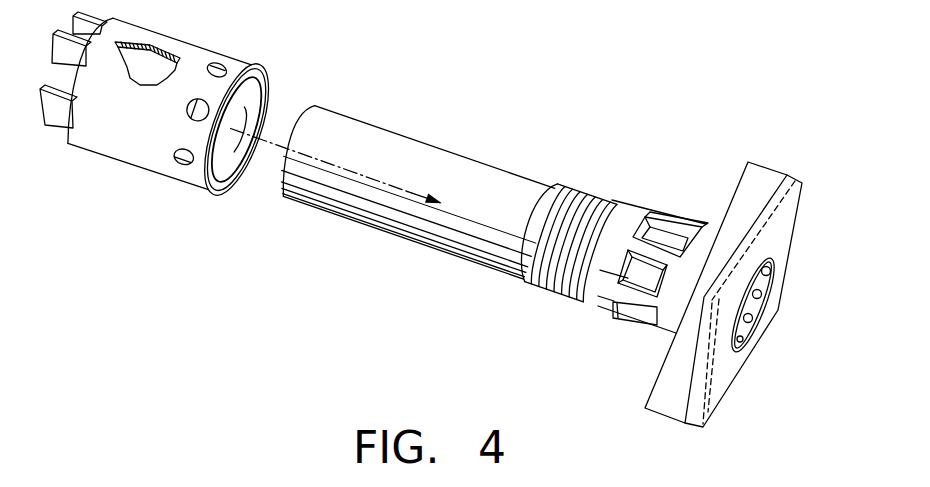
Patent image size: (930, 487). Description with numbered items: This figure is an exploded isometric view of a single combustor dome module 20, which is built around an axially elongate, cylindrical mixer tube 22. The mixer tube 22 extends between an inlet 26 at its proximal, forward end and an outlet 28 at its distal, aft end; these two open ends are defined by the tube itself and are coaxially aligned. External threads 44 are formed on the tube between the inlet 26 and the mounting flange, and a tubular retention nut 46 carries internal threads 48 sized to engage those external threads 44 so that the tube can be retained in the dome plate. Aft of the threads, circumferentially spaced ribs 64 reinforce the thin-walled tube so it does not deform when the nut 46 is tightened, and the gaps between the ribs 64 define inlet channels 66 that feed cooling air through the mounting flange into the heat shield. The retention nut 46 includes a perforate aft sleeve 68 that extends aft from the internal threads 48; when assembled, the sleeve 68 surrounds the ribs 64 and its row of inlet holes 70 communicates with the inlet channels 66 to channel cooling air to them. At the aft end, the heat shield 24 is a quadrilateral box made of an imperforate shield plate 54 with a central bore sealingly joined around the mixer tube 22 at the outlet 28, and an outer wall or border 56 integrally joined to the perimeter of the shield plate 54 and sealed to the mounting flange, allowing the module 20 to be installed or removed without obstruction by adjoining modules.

The dome module 20 is at (545, 82).
The mixer tube 22 is at (394, 132).
The heat shield 24 is at (802, 215).
The inlet 26 is at (300, 112).
The outlet 28 is at (758, 312).
The external threads 44 is at (585, 205).
The retention nut 46 is at (107, 157).
The internal threads 48 is at (125, 42).
The shield plate 54 is at (782, 258).
The border 56 is at (753, 180).
The ribs 64 is at (660, 253).
The inlet channels 66 is at (640, 278).
The aft sleeve 68 is at (238, 65).
The inlet holes 70 is at (177, 152).